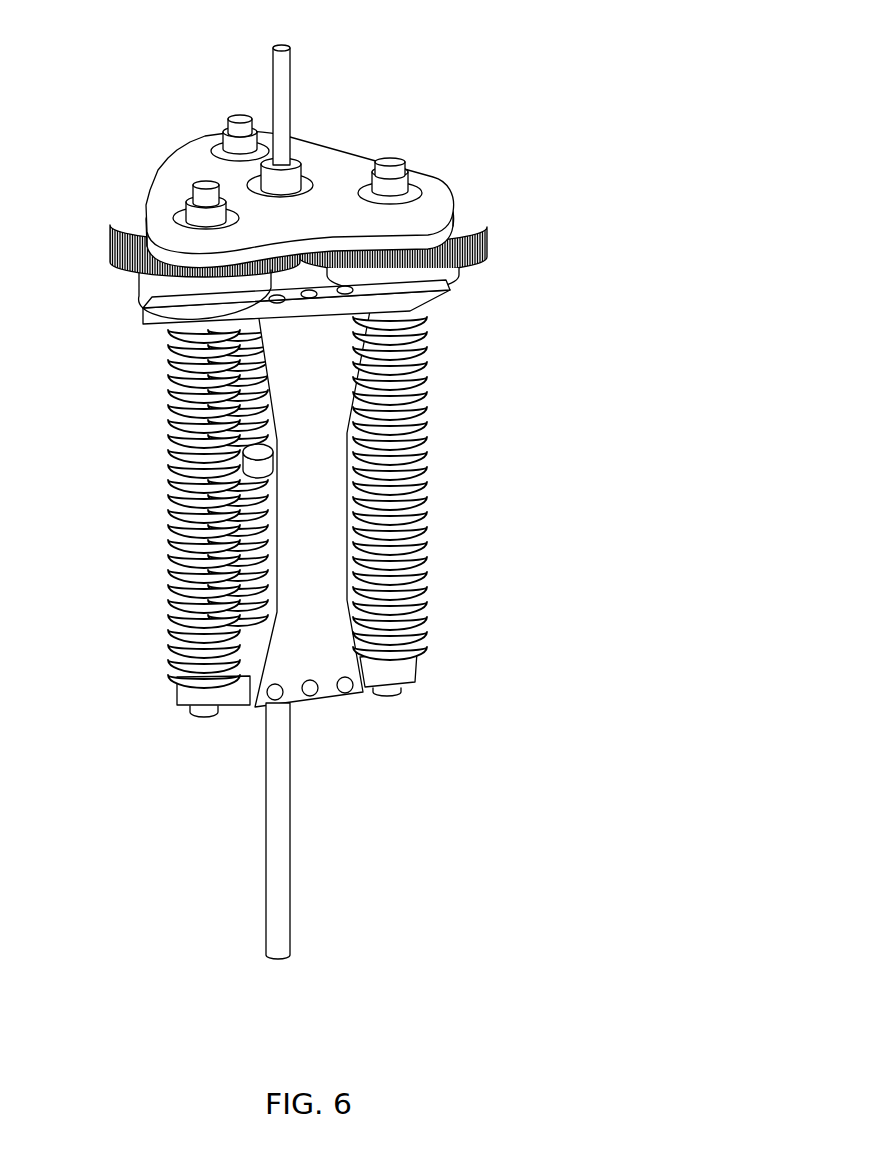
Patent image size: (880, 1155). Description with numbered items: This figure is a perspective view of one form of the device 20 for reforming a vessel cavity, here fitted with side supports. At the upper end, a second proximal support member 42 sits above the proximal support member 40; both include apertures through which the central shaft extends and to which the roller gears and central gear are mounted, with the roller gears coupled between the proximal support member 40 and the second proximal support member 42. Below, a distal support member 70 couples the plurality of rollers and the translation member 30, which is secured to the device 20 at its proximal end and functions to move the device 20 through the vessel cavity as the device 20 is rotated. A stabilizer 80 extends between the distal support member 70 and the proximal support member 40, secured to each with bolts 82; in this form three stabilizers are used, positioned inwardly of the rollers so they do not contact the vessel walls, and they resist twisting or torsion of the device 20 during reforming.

The device 20 is at (464, 64).
The translation member 30 is at (285, 908).
The proximal support member 40 is at (167, 316).
The second proximal support member 42 is at (170, 199).
The distal support member 70 is at (190, 693).
The stabilizer 80 is at (318, 492).
The bolts 82 is at (452, 296).